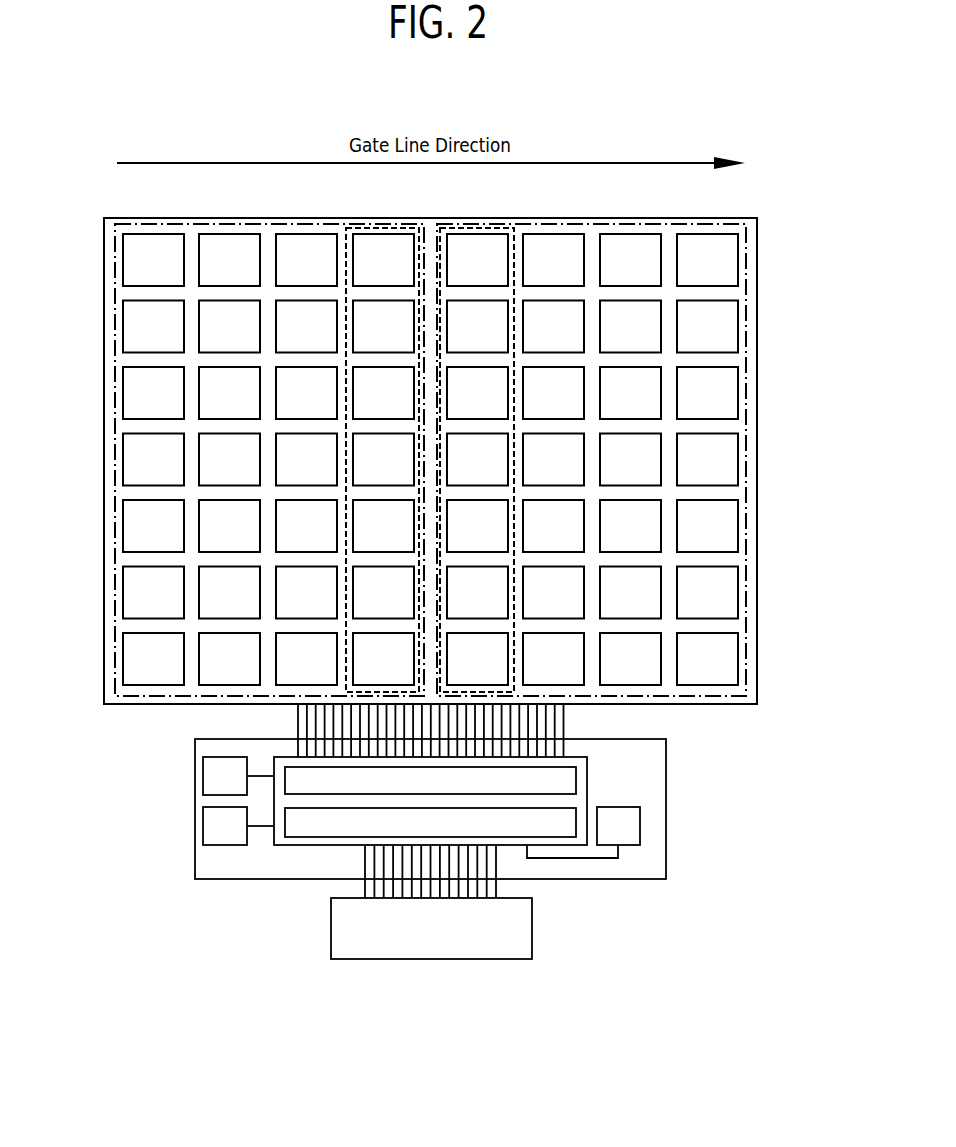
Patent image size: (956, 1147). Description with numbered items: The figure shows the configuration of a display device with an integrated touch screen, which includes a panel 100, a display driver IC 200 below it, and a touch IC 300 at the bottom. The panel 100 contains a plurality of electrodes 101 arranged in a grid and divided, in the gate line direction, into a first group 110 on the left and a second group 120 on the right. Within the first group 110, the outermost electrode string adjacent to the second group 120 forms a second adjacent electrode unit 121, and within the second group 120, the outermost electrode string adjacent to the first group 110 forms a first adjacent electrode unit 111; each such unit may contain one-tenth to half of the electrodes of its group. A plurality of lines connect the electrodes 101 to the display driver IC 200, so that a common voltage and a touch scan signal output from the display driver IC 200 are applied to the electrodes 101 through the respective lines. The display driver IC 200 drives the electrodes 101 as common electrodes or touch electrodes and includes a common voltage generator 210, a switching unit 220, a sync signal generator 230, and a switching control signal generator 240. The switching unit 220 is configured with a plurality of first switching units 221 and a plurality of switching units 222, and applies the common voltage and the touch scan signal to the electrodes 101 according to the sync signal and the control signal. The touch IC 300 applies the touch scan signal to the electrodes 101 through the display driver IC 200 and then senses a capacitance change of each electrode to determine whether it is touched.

The panel 100 is at (758, 278).
The electrodes 101 is at (738, 391).
The first group 110 is at (113, 286).
The first adjacent electrode unit 111 is at (521, 237).
The second group 120 is at (746, 457).
The second adjacent electrode unit 121 is at (348, 237).
The display driver IC 200 is at (666, 752).
The common voltage generator 210 is at (633, 835).
The switching unit 220 is at (587, 778).
The first switching units 221 is at (445, 830).
The switching units 222 is at (445, 789).
The sync signal generator 230 is at (240, 835).
The switching control signal generator 240 is at (240, 785).
The touch IC 300 is at (445, 937).